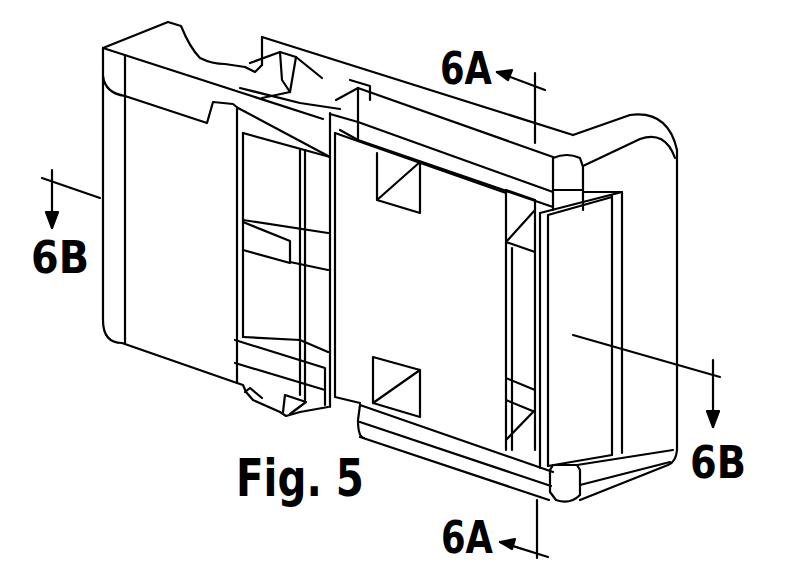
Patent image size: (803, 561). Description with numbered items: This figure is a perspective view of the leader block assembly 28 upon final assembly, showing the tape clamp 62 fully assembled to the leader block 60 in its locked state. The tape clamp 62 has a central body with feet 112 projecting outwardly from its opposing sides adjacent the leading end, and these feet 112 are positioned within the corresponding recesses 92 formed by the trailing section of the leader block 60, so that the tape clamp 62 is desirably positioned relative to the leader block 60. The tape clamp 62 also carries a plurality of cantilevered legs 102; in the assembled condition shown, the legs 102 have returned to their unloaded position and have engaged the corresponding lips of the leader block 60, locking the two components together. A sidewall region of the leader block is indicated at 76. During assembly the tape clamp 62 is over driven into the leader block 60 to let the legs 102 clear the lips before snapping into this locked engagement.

The leader block assembly 28 is at (641, 31).
The leader block 60 is at (157, 308).
The tape clamp 62 is at (428, 283).
The side wall 76 is at (625, 270).
The recesses 92 is at (373, 90).
The cantilevered legs 102 is at (415, 372).
The feet 112 is at (348, 113).